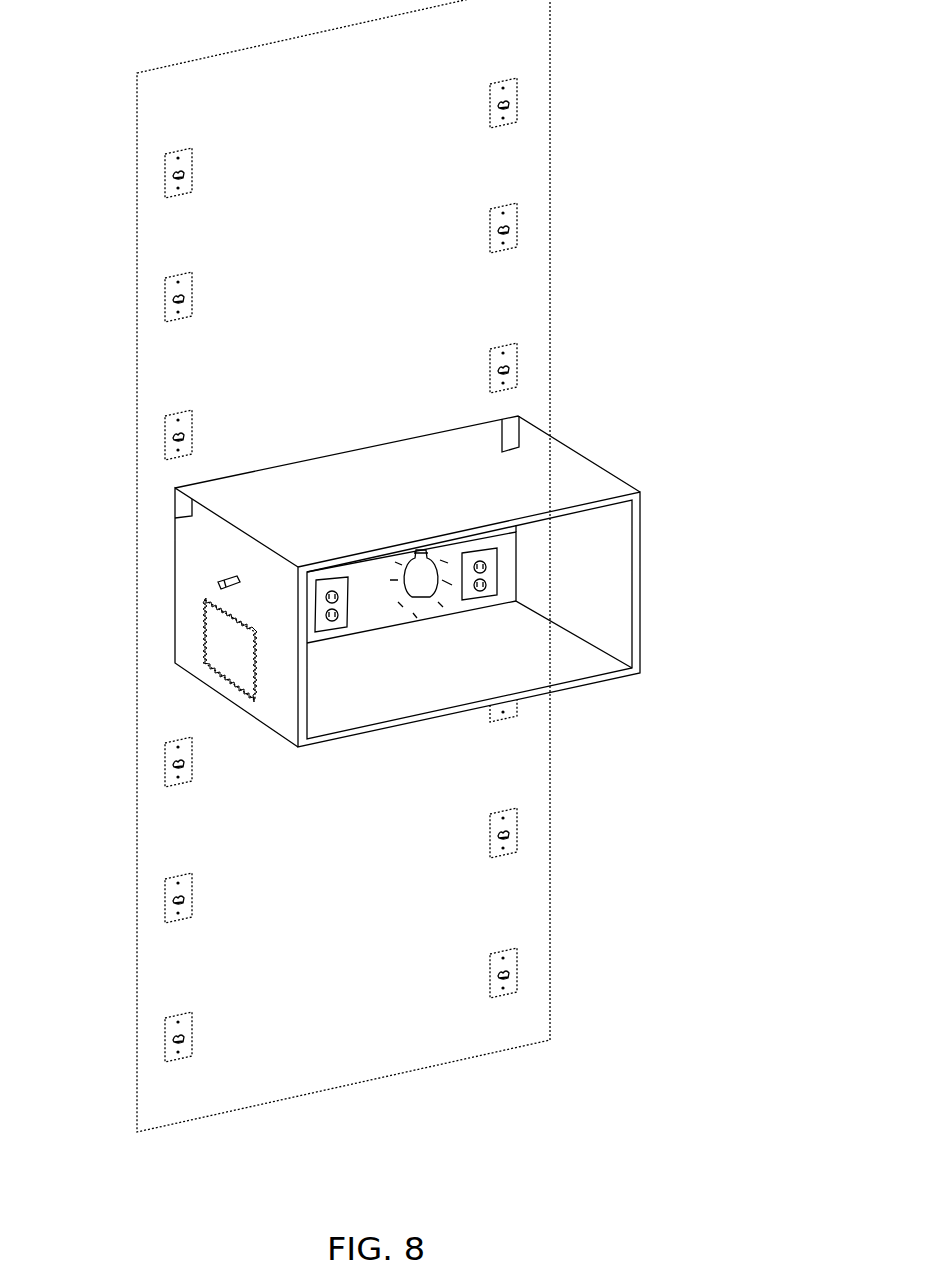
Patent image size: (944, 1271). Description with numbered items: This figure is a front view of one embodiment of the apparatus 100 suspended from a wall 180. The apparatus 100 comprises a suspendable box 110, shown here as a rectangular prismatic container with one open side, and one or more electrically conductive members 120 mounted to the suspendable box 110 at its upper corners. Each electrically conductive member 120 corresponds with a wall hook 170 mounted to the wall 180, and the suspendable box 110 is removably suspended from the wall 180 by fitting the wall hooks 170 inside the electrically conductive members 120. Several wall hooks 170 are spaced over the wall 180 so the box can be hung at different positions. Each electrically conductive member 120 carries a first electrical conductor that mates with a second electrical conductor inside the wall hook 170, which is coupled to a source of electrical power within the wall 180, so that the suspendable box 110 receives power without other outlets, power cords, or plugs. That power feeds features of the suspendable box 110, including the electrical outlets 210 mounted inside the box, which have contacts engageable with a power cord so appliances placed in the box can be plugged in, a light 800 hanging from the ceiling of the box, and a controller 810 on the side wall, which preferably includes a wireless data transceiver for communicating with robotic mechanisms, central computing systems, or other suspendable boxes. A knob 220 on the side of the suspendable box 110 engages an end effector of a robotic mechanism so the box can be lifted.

The apparatus 100 is at (642, 461).
The suspendable box 110 is at (430, 507).
The electrically conductive member 120 is at (187, 520).
The wall hook 170 is at (510, 80).
The wall 180 is at (390, 110).
The electrical outlet 210 is at (327, 632).
The knob 220 is at (217, 583).
The light 800 is at (425, 598).
The controller 810 is at (206, 664).